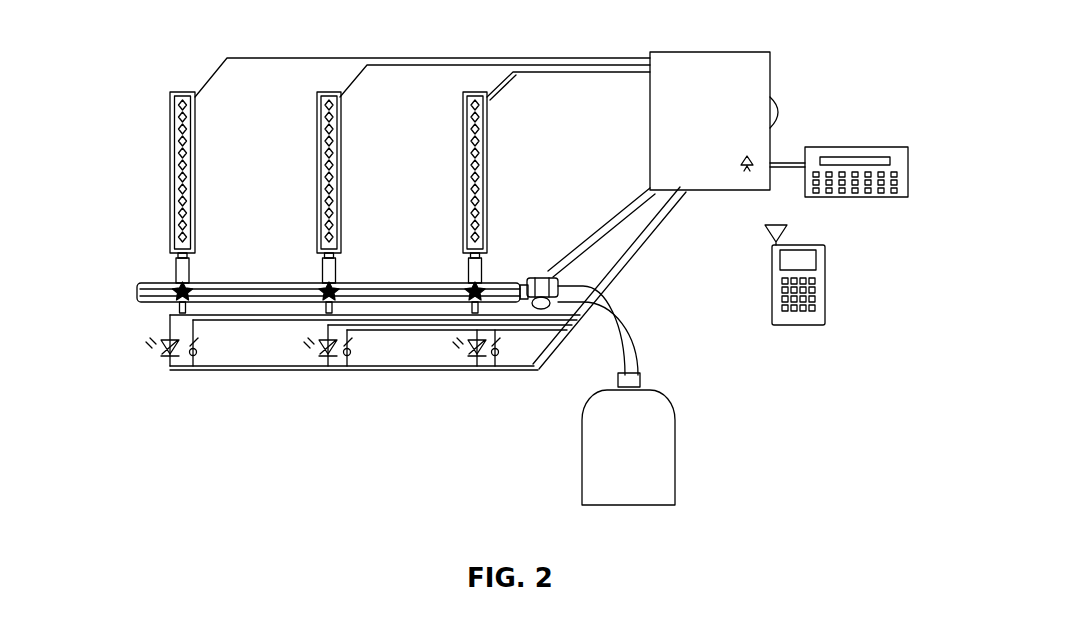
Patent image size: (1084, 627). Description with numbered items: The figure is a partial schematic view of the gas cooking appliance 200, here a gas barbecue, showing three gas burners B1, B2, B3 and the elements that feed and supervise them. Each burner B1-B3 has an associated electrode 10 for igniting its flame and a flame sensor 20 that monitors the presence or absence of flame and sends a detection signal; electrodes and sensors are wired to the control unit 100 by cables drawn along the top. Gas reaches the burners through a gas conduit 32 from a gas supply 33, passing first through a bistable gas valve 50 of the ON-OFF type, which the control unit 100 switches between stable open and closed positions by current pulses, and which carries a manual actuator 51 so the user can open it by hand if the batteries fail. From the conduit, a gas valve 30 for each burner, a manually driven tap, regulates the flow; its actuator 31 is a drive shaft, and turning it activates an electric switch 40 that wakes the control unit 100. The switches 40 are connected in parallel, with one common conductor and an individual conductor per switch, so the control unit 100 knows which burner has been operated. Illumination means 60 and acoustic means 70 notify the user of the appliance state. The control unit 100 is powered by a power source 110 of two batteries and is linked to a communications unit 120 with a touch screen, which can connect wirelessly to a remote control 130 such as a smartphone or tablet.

The electrode 10 is at (193, 98).
The flame sensor 20 is at (206, 98).
The gas valve 30 is at (190, 268).
The actuator 31 is at (180, 312).
The gas conduit 32 is at (213, 288).
The gas supply 33 is at (647, 452).
The electric switch 40 is at (193, 357).
The bistable gas valve 50 is at (550, 273).
The manual actuator 51 is at (580, 313).
The illumination means 60 is at (158, 368).
The acoustic means 70 is at (746, 175).
The control unit 100 is at (735, 83).
The power source 110 is at (782, 112).
The communications unit 120 is at (822, 153).
The remote control 130 is at (820, 280).
The gas cooking appliance 200 is at (755, 390).
The gas burner B1 is at (180, 165).
The gas burner B2 is at (327, 166).
The gas burner B3 is at (473, 168).